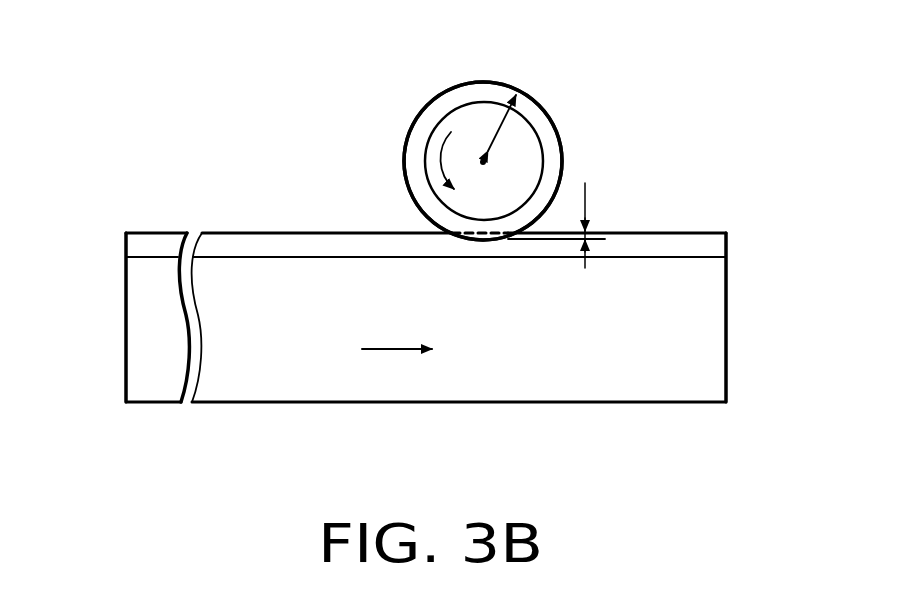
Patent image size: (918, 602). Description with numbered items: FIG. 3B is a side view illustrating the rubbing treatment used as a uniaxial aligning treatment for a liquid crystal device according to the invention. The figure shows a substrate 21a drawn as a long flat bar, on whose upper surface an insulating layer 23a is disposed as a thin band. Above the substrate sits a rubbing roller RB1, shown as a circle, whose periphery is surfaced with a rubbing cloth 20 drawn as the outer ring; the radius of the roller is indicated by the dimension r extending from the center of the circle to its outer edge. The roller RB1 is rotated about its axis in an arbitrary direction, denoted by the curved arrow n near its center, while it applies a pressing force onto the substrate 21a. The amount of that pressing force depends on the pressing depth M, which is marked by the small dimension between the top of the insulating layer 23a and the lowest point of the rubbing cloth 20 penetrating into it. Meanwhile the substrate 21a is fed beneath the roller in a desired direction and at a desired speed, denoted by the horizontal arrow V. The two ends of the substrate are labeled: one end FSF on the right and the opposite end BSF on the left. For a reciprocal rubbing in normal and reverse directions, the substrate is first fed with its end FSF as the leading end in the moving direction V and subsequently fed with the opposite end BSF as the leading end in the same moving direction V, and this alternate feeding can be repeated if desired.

The rubbing cloth 20 is at (547, 109).
The rubbing roller RB1 is at (417, 107).
The insulating layer 23a is at (710, 249).
The substrate 21a is at (705, 318).
The one end of substrate FSF is at (729, 370).
The opposite end of substrate BSF is at (123, 377).
The roller radius r is at (497, 130).
The rotation direction n is at (453, 160).
The moving direction and speed V is at (397, 331).
The pressing depth M is at (560, 225).